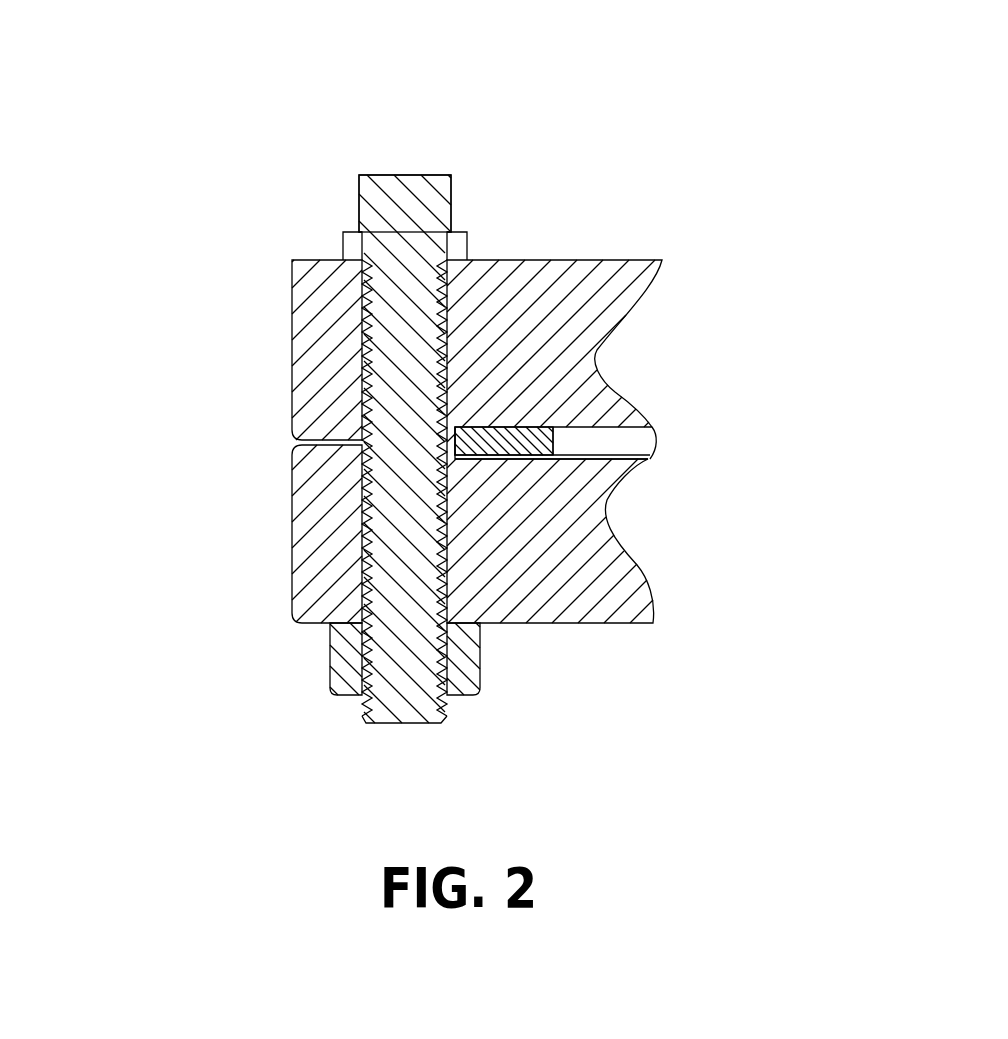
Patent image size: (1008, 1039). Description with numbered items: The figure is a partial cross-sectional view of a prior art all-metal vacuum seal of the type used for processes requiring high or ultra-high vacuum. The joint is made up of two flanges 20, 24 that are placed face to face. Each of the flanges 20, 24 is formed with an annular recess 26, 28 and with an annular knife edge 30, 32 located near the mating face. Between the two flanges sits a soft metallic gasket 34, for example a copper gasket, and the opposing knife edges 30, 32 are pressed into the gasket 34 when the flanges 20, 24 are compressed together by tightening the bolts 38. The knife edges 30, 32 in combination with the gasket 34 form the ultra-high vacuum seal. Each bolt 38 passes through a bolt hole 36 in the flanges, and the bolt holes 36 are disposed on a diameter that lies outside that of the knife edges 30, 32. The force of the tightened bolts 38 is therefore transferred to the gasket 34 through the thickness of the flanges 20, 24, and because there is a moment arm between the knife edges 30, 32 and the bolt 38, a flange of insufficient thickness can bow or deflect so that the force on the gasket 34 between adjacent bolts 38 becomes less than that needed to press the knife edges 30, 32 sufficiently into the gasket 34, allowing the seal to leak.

The flange 20 is at (207, 350).
The flange 24 is at (207, 540).
The annular recess 26 is at (659, 445).
The annular recess 28 is at (587, 626).
The annular knife edge 30 is at (634, 332).
The annular knife edge 32 is at (648, 548).
The gasket 34 is at (712, 414).
The bolt hole 36 is at (337, 363).
The bolt 38 is at (488, 118).